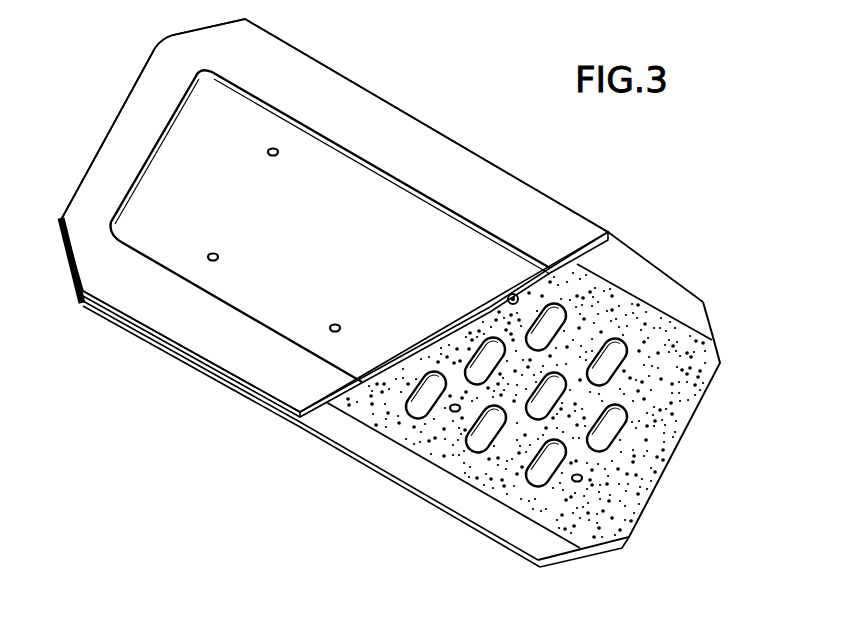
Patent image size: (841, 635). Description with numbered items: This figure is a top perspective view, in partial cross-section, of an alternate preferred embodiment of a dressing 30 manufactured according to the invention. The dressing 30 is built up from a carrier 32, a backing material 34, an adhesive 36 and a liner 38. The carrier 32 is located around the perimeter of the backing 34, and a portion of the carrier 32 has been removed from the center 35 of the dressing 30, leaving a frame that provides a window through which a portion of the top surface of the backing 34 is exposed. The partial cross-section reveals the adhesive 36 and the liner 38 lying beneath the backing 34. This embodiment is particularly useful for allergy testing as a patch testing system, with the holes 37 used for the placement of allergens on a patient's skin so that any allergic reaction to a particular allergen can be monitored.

The dressing 30 is at (122, 142).
The carrier 32 is at (305, 80).
The backing material 34 is at (382, 292).
The center 35 is at (405, 217).
The adhesive 36 is at (660, 428).
The holes 37 is at (268, 151).
The liner 38 is at (721, 364).